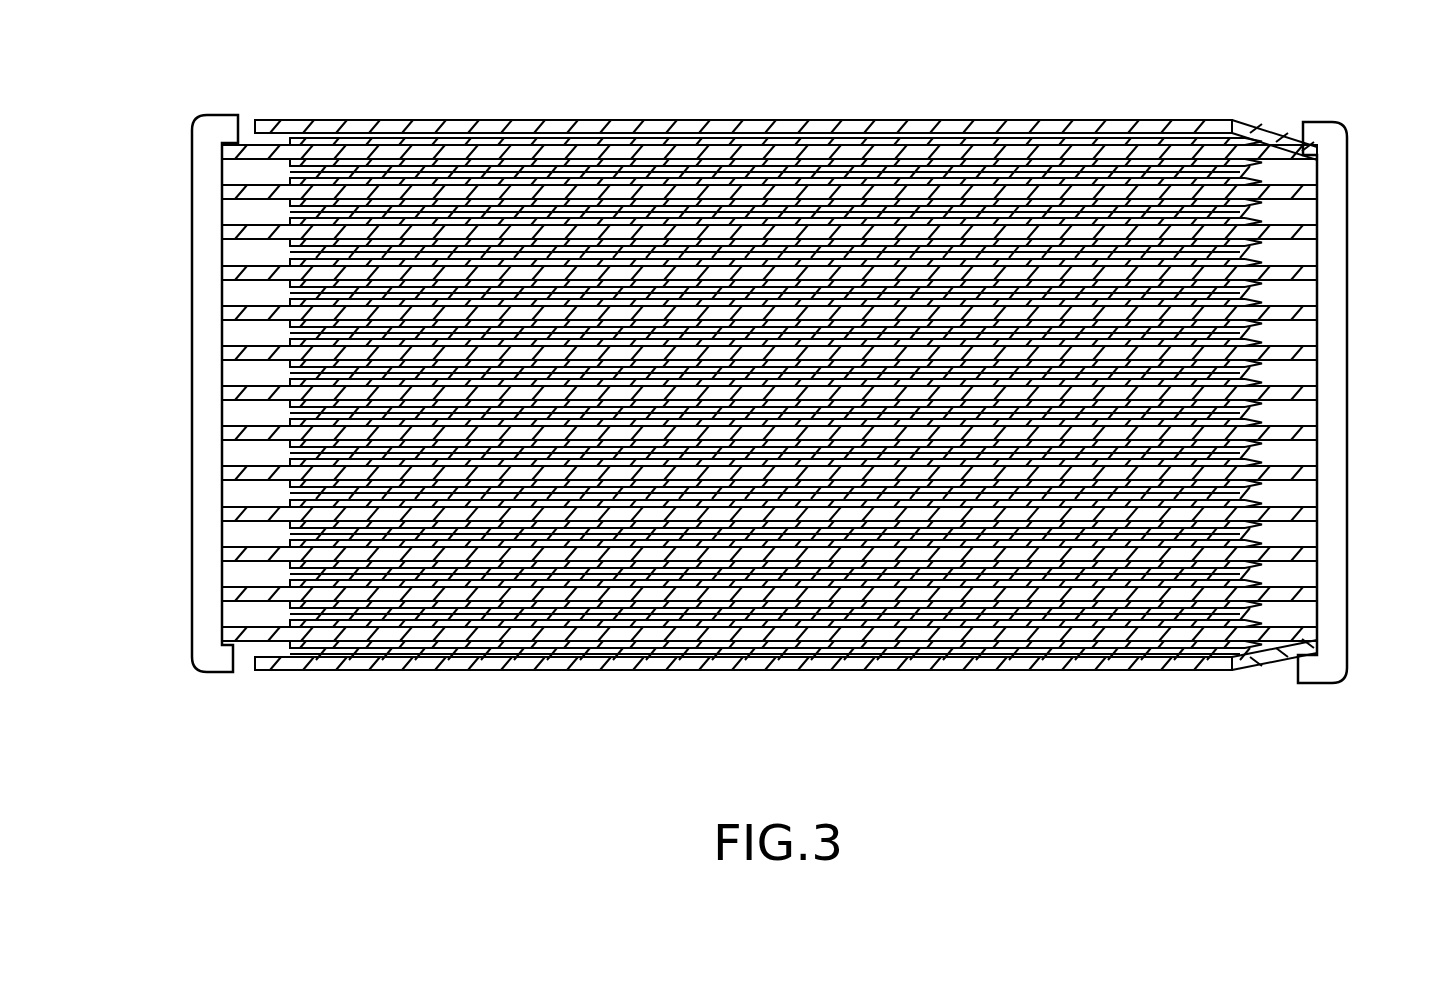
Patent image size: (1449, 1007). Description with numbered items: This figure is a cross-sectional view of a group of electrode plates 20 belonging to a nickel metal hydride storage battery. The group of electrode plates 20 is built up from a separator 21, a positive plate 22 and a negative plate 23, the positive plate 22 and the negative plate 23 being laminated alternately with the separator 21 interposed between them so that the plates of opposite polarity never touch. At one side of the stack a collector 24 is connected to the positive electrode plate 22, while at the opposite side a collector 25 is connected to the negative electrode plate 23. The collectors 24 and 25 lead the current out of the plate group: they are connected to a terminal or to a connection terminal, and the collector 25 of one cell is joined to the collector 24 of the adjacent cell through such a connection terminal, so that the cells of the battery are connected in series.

The group of electrode plates 20 is at (187, 106).
The separator 21 is at (1018, 183).
The positive plate 22 is at (232, 270).
The negative plate 23 is at (1120, 183).
The collector 24 is at (200, 402).
The collector 25 is at (1335, 393).